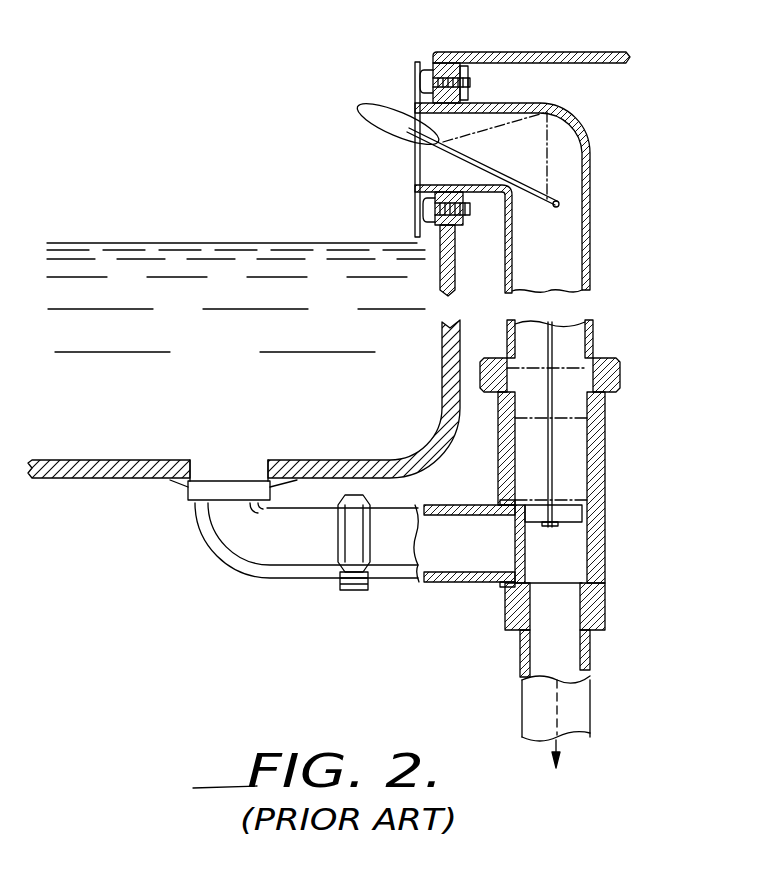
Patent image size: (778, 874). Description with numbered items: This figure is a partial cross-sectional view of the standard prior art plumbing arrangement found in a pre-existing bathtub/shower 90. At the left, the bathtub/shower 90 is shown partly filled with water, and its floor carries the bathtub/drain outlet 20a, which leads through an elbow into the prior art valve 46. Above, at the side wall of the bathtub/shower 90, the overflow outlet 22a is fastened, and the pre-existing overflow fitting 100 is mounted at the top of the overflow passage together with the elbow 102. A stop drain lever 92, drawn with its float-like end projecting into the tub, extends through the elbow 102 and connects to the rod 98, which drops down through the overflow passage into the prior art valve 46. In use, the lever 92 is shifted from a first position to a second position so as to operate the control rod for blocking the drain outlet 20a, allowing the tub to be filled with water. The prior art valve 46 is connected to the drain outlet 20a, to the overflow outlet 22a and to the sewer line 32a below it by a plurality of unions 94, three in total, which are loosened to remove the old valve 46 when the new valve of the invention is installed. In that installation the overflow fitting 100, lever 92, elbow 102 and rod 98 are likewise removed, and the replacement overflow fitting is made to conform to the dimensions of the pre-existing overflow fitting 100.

The bathtub/shower 90 is at (123, 280).
The stop drain lever 92 is at (370, 107).
The overflow fitting 100 is at (418, 60).
The elbow 102 is at (586, 138).
The rod 98 is at (560, 250).
The overflow outlet 22a is at (417, 238).
The unions 94 is at (620, 376).
The prior art valve 46 is at (618, 530).
The sewer line 32a is at (588, 708).
The bathtub/drain outlet 20a is at (218, 483).